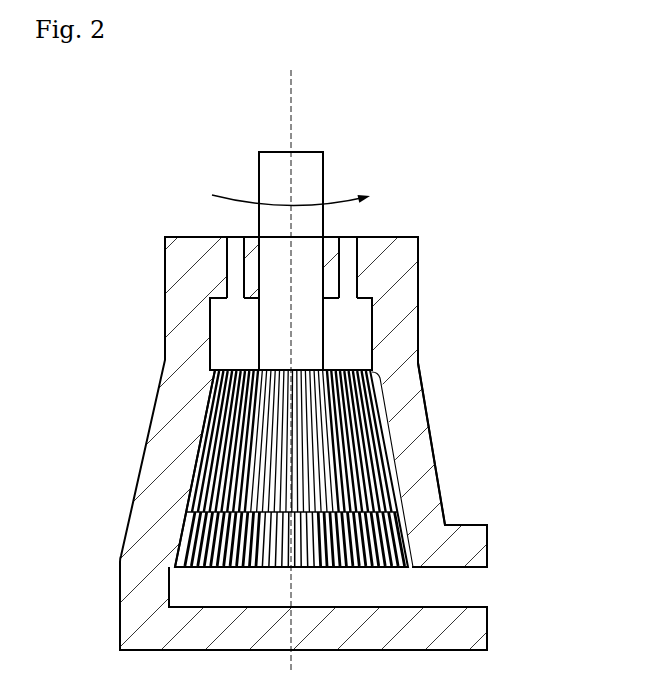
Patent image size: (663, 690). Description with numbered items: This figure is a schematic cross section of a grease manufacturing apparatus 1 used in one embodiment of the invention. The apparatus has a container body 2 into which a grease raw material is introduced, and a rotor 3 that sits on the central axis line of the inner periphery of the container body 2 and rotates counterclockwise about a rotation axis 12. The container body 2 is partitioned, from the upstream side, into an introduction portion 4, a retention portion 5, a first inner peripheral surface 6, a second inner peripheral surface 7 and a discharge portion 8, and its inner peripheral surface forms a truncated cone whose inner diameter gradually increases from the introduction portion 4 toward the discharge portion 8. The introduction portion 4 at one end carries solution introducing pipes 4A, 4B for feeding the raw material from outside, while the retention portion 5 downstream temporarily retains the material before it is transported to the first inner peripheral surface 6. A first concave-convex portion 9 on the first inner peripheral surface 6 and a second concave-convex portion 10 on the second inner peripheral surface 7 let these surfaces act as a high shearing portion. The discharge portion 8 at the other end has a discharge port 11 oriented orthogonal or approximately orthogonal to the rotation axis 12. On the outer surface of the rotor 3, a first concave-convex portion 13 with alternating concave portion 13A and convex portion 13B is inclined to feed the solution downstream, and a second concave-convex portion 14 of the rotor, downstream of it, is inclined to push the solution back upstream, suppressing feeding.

The grease manufacturing apparatus 1 is at (550, 130).
The container body 2 is at (403, 268).
The rotor 3 is at (316, 170).
The introduction portion 4 is at (168, 273).
The solution introducing pipe 4A is at (232, 254).
The solution introducing pipe 4B is at (348, 256).
The retention portion 5 is at (358, 355).
The first inner peripheral surface 6 is at (400, 437).
The second inner peripheral surface 7 is at (446, 530).
The discharge portion 8 is at (193, 583).
The first concave-convex portion 9 is at (186, 498).
The second concave-convex portion 10 is at (174, 554).
The discharge port 11 is at (452, 586).
The rotation axis 12 is at (293, 83).
The first concave-convex portion of the rotor 13 is at (199, 457).
The concave portion 13A is at (326, 370).
The convex portion 13B is at (253, 370).
The second concave-convex portion of the rotor 14 is at (178, 537).